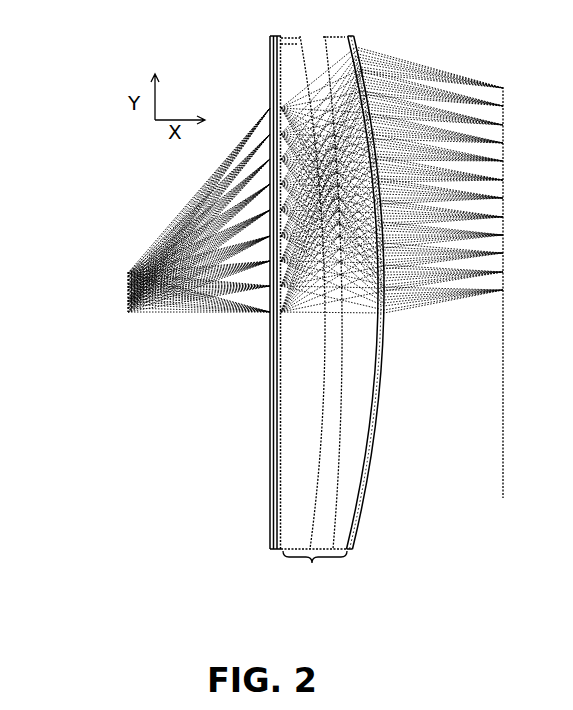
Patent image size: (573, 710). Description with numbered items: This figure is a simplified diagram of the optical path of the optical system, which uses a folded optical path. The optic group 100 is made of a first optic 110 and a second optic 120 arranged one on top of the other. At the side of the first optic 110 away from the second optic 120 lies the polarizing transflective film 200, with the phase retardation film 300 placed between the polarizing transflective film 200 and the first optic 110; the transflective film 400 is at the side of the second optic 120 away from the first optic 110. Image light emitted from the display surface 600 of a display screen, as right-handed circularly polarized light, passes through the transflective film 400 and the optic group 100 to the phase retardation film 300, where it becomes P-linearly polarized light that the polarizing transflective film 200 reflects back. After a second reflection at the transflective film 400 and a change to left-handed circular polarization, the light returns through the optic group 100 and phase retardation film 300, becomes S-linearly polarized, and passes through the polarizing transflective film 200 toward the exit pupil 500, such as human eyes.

The optic group 100 is at (312, 563).
The first optic 110 is at (292, 493).
The second optic 120 is at (347, 532).
The polarizing transflective film 200 is at (272, 445).
The phase retardation film 300 is at (276, 420).
The transflective film 400 is at (372, 450).
The exit pupil 500 is at (128, 283).
The display surface 600 is at (503, 446).